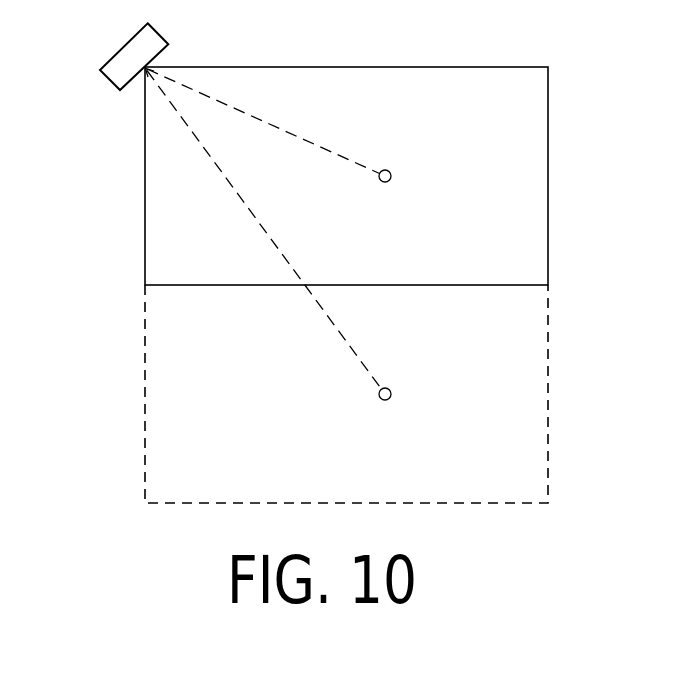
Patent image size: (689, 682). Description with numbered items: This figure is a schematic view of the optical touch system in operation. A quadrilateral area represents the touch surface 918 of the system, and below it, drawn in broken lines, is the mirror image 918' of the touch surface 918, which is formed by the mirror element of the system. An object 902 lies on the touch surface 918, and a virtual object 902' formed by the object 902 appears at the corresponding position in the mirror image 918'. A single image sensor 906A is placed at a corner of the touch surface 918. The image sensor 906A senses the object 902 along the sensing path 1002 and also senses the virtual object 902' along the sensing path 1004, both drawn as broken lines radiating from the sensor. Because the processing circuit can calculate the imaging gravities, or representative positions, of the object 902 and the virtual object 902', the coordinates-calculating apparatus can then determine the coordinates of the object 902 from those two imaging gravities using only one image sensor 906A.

The touch surface 918 is at (310, 176).
The mirror image of the touch surface 918' is at (310, 394).
The image sensor 906A is at (125, 43).
The object 902 is at (505, 170).
The virtual object 902' is at (508, 388).
The sensing path 1002 is at (192, 87).
The sensing path 1004 is at (200, 146).